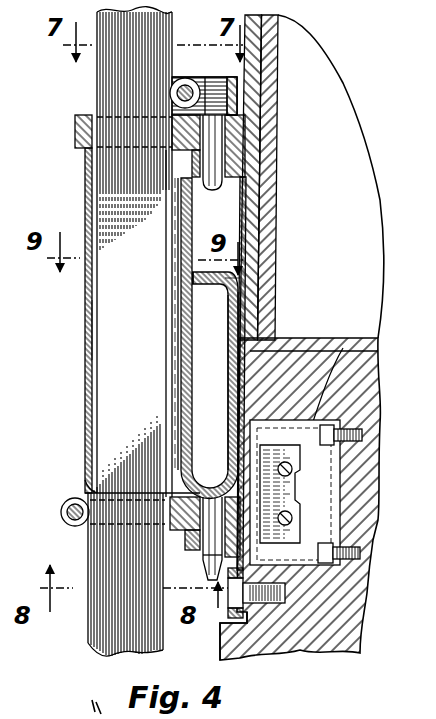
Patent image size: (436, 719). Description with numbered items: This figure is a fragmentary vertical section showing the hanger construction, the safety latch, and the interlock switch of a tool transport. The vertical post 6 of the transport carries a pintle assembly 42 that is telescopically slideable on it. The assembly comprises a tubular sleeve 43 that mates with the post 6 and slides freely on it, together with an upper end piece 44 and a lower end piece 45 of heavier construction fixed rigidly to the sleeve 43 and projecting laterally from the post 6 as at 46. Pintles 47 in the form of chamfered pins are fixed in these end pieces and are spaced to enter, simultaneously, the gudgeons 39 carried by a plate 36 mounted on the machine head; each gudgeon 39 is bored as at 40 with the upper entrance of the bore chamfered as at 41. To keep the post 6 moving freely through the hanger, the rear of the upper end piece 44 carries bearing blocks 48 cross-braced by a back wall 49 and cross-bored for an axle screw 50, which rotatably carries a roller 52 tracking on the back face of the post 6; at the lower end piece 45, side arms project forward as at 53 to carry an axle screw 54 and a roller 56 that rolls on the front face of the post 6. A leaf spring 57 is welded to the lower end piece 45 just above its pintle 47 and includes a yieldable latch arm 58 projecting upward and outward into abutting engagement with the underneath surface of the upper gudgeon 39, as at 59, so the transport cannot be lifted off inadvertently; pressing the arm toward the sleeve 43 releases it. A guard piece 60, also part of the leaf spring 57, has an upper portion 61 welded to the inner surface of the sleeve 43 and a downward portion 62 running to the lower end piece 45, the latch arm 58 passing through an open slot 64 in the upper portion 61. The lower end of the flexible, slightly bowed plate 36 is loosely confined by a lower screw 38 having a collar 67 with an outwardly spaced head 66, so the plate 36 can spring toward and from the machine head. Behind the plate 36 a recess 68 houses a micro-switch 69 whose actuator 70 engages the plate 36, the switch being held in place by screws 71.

The vertical post 6 is at (98, 632).
The plate 36 is at (250, 262).
The lower screw 38 is at (287, 595).
The gudgeons 39 is at (247, 178).
The bore 40 is at (204, 551).
The chamfer 41 is at (178, 524).
The pintle assembly 42 is at (80, 329).
The tubular sleeve 43 is at (85, 400).
The upper end piece 44 is at (75, 136).
The lower end piece 45 is at (97, 533).
The laterally projecting portion of end pieces 46 is at (238, 135).
The pintles 47 is at (215, 192).
The bearing blocks 48 is at (215, 87).
The back wall 49 is at (237, 97).
The axle screw 50 is at (185, 78).
The roller 52 is at (200, 77).
The forwardly projecting side arms 53 is at (88, 478).
The axle screw 54 is at (70, 505).
The roller 56 is at (60, 513).
The leaf spring 57 is at (243, 325).
The latch arm 58 is at (191, 370).
The abutting engagement 59 is at (193, 190).
The guard piece 60 is at (230, 423).
The upper portion of guard piece 61 is at (230, 270).
The downwardly projecting portion of guard piece 62 is at (247, 350).
The open slot 64 is at (182, 277).
The head 66 is at (232, 610).
The collar 67 is at (255, 605).
The recess 68 is at (331, 383).
The micro-switch 69 is at (316, 472).
The actuator 70 is at (257, 450).
The screws 71 is at (360, 430).